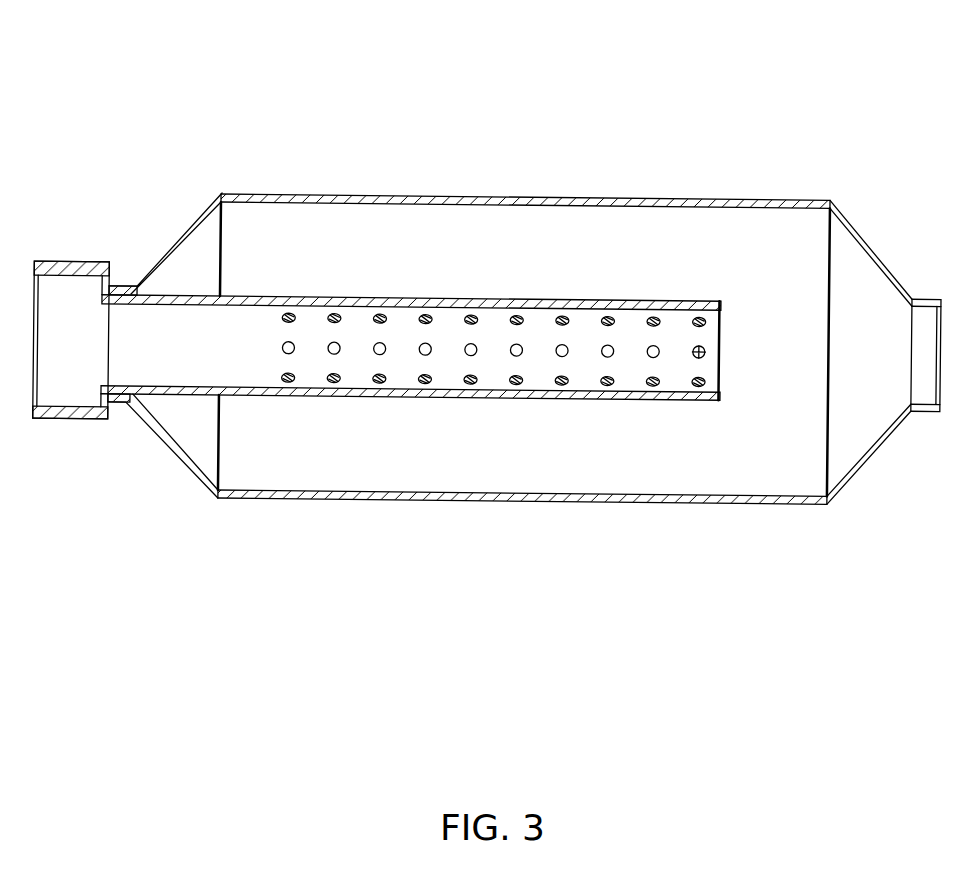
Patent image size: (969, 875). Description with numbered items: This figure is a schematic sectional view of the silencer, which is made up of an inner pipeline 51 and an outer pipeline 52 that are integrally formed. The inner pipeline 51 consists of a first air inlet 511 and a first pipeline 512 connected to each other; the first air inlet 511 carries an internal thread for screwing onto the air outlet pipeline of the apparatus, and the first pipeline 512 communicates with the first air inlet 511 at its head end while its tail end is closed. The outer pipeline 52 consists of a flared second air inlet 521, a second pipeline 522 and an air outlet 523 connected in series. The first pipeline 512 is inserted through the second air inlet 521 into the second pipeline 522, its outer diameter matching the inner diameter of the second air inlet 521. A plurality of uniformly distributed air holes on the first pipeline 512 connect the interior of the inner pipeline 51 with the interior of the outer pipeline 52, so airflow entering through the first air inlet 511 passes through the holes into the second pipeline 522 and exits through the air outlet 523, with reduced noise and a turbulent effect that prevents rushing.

The inner pipeline 51 is at (258, 76).
The first air inlet 511 is at (66, 347).
The first pipeline 512 is at (200, 347).
The outer pipeline 52 is at (897, 648).
The second air inlet 521 is at (185, 425).
The second pipeline 522 is at (505, 425).
The air outlet 523 is at (862, 425).